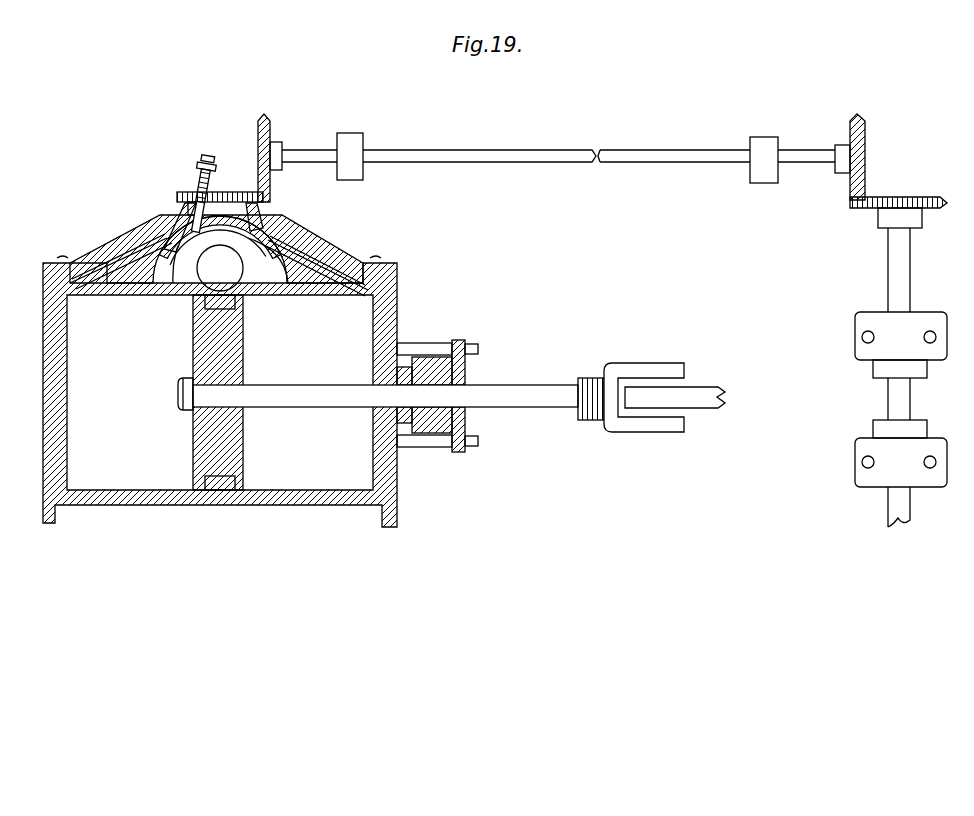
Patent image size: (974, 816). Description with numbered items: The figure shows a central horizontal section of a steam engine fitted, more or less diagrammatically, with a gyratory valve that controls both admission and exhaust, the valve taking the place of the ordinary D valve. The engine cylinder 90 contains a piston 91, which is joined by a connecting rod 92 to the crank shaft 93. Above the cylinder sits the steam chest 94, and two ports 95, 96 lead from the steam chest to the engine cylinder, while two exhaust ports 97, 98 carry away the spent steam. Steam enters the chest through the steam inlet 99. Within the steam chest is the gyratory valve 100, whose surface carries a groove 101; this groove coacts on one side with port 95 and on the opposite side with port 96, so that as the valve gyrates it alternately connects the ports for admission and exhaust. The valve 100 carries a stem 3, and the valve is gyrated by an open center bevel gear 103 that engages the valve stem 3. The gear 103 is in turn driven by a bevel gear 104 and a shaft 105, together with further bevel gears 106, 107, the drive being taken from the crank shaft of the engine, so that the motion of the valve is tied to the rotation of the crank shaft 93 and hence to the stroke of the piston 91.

The valve stem 3 is at (187, 169).
The engine cylinder 90 is at (314, 473).
The piston 91 is at (232, 440).
The connecting rod 92 is at (702, 400).
The crank shaft 93 is at (897, 392).
The steam chest 94 is at (312, 262).
The port 95 is at (108, 270).
The port 96 is at (338, 277).
The exhaust port 97 is at (168, 225).
The exhaust port 98 is at (257, 226).
The steam inlet 99 is at (236, 275).
The gyratory valve 100 is at (178, 262).
The groove 101 is at (165, 226).
The open center bevel gear 103 is at (224, 192).
The bevel gear 104 is at (268, 130).
The shaft 105 is at (545, 156).
The bevel gear 106 is at (868, 140).
The bevel gear 107 is at (920, 195).